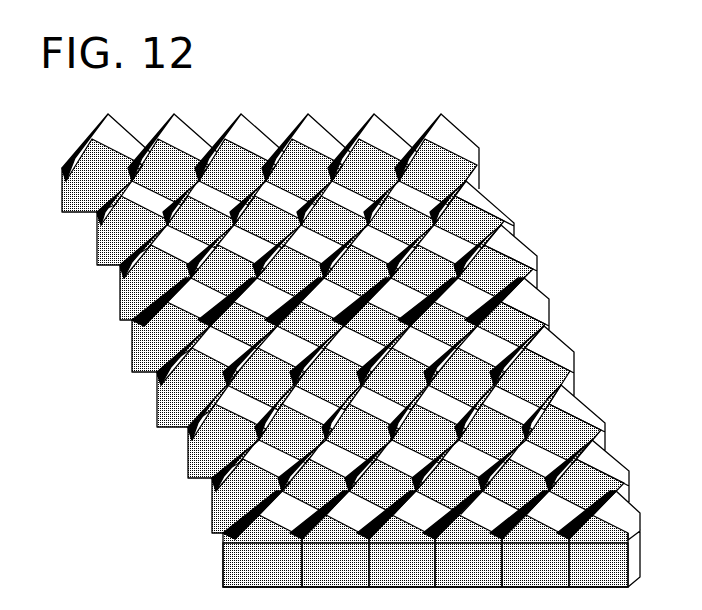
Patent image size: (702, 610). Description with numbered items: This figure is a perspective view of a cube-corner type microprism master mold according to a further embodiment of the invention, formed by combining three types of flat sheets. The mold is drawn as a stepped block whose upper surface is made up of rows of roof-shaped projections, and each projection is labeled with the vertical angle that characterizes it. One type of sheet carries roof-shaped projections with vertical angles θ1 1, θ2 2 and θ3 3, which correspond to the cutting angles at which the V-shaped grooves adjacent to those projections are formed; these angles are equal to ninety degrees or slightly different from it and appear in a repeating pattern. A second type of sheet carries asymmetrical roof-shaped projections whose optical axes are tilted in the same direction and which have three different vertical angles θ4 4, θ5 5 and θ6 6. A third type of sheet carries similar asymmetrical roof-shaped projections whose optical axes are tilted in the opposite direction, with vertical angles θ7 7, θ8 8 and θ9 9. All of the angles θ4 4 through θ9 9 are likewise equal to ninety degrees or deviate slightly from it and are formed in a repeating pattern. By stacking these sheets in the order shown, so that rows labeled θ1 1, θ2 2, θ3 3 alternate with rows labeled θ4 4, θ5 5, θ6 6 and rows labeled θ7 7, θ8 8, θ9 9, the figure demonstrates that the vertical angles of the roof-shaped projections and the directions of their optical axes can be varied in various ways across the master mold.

The vertical angle θ 1 is at (276, 336).
The vertical angle θ 2 is at (344, 326).
The vertical angle θ 3 is at (411, 326).
The vertical angle θ 4 is at (281, 337).
The vertical angle θ 5 is at (349, 329).
The vertical angle θ 6 is at (417, 329).
The vertical angle θ 7 is at (318, 444).
The vertical angle θ 8 is at (390, 444).
The vertical angle θ 9 is at (452, 444).